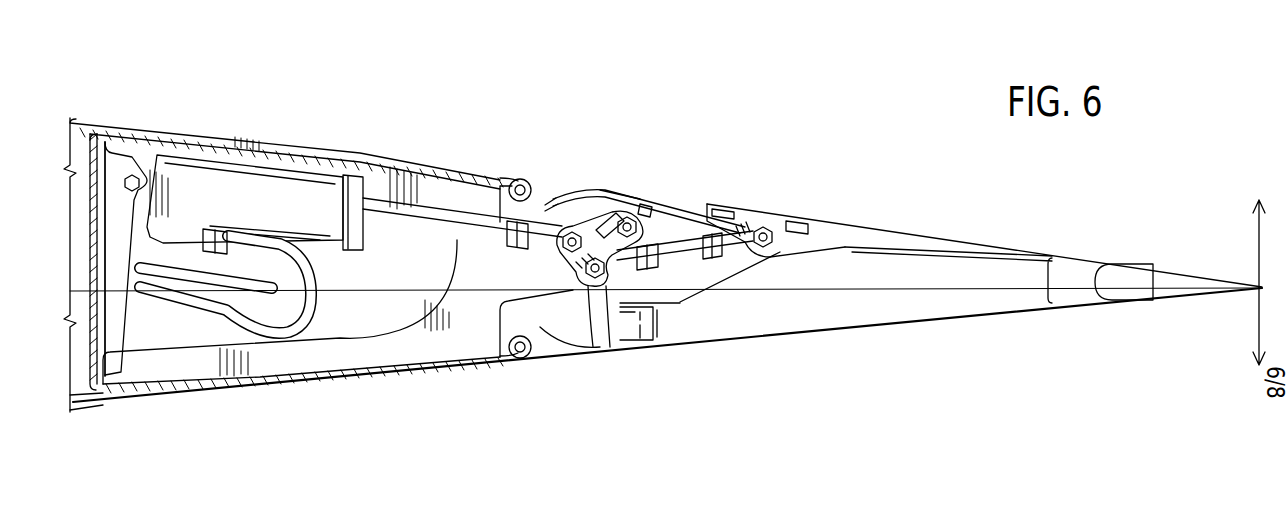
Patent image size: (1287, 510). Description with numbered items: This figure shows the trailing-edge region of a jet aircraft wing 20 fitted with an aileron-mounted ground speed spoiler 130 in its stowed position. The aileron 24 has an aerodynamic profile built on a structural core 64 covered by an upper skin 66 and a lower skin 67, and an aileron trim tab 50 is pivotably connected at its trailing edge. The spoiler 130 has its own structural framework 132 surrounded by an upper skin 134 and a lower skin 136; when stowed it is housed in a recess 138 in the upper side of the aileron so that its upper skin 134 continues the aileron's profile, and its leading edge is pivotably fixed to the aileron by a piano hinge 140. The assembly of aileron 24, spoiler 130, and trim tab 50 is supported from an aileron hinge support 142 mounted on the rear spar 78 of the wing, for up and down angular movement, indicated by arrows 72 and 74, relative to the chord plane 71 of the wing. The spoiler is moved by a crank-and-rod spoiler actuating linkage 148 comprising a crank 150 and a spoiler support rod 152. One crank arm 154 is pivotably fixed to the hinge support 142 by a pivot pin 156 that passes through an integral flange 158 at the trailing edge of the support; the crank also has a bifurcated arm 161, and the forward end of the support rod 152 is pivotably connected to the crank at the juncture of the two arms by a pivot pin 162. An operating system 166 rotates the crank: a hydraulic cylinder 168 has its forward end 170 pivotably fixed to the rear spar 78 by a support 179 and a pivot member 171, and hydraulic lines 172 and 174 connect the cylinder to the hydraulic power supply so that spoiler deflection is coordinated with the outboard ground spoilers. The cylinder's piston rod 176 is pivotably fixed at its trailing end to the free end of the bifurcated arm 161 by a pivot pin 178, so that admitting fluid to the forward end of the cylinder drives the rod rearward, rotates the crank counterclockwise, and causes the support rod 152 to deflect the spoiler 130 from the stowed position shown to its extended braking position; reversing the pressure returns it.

The jet aircraft wing 20 is at (150, 106).
The rear spar 78 is at (81, 400).
The forward end of hydraulic cylinder 170 is at (146, 170).
The pivot member 171 is at (131, 175).
The support 179 is at (106, 165).
The hydraulic cylinder 168 is at (246, 168).
The operating system 166 is at (265, 144).
The piston rod 176 is at (422, 213).
The hydraulic line 172 is at (196, 305).
The hydraulic line 174 is at (178, 286).
The aileron hinge support 142 is at (517, 212).
The crank 150 is at (566, 286).
The crank arm 154 is at (620, 213).
The pivot pin 156 is at (640, 210).
The pivot pin 178 is at (576, 228).
The piano hinge 140 is at (600, 186).
The upper skin 66 is at (613, 192).
The spoiler support rod 152 is at (692, 244).
The spoiler actuating linkage 148 is at (690, 235).
The integral flange 158 is at (684, 226).
The structural framework 132 is at (786, 201).
The core 64 is at (673, 326).
The bifurcated arm 161 is at (600, 330).
The pivot pin 162 is at (610, 310).
The ground speed spoiler 130 is at (938, 224).
The lower skin 136 is at (950, 262).
The upper skin 134 is at (970, 241).
The recess 138 is at (986, 253).
The aileron 24 is at (935, 326).
The lower skin 67 is at (781, 338).
The chord plane 71 is at (968, 292).
The aileron trim tab 50 is at (1176, 300).
The arrow 72 is at (1259, 230).
The arrow 74 is at (1259, 328).